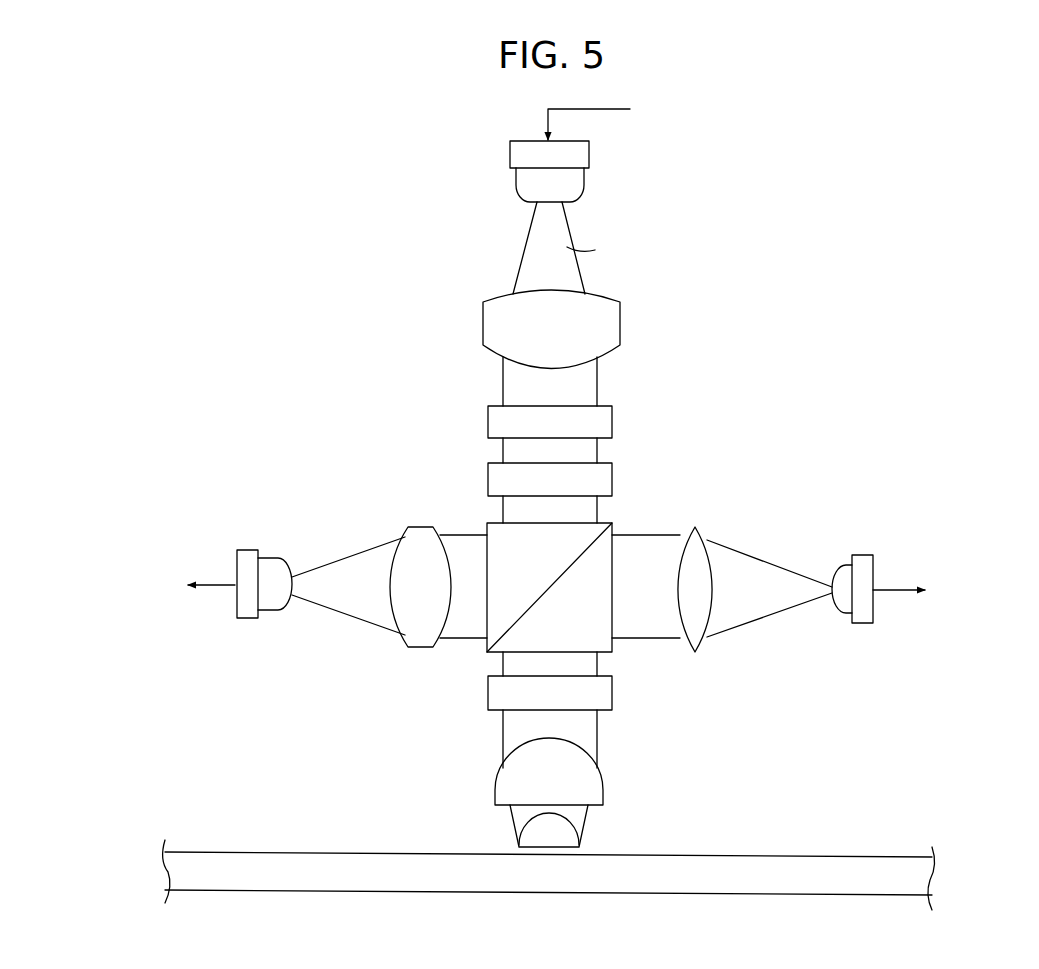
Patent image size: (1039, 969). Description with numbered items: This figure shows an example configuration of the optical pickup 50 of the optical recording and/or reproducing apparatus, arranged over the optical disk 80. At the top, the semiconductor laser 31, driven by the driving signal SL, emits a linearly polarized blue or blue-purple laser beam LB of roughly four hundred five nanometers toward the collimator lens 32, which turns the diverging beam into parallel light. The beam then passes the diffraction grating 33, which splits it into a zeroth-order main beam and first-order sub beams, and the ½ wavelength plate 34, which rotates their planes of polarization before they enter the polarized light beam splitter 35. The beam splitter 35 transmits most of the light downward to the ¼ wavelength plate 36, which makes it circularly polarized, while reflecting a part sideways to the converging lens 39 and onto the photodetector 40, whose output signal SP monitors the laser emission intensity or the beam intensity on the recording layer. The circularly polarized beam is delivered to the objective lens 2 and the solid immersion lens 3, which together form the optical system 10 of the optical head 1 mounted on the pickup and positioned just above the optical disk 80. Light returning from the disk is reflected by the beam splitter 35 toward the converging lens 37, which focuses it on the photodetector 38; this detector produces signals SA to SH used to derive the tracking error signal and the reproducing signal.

The optical head 1 is at (475, 815).
The objective lens 2 is at (603, 785).
The solid immersion lens 3 is at (579, 840).
The optical system 10 is at (655, 772).
The semiconductor laser 31 is at (510, 157).
The collimator lens 32 is at (483, 313).
The diffraction grating 33 is at (488, 415).
The ½ wavelength plate 34 is at (488, 470).
The polarized light beam splitter 35 is at (615, 522).
The ¼ wavelength plate 36 is at (612, 690).
The converging lens 37 is at (700, 527).
The photodetector 38 is at (865, 555).
The converging lens 39 is at (422, 524).
The photodetector 40 is at (248, 550).
The optical pickup 50 is at (853, 300).
The optical disk 80 is at (220, 852).